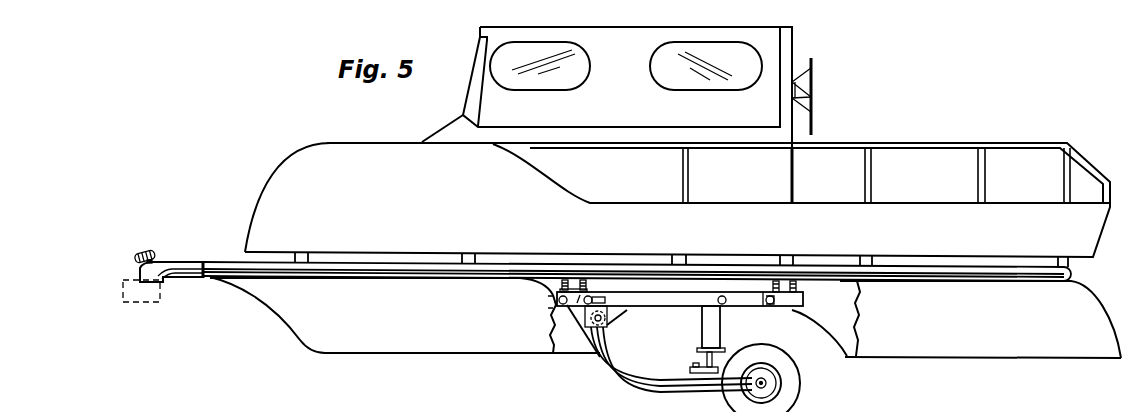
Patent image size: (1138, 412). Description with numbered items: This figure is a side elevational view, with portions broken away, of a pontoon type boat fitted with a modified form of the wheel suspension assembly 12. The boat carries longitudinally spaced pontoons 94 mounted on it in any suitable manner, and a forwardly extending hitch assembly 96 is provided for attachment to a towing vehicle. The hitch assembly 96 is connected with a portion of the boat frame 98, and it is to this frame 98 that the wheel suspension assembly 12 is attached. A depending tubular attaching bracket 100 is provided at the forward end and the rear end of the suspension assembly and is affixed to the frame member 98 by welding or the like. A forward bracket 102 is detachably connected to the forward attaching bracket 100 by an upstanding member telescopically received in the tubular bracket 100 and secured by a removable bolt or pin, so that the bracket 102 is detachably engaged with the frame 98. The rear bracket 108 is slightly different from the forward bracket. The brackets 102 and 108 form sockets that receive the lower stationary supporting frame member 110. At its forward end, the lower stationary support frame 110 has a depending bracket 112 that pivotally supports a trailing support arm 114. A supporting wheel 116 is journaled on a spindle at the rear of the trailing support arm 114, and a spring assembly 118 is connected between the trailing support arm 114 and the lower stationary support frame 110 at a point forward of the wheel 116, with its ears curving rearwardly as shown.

The wheel suspension assembly 12 is at (848, 128).
The pontoon 94 is at (941, 340).
The hitch assembly 96 is at (192, 268).
The boat frame 98 is at (933, 280).
The tubular attaching bracket 100 is at (577, 290).
The forward bracket 102 is at (553, 308).
The rear bracket 108 is at (803, 302).
The lower stationary supporting frame member 110 is at (646, 300).
The depending bracket 112 is at (610, 323).
The trailing support arm 114 is at (645, 373).
The supporting wheel 116 is at (790, 377).
The spring assembly 118 is at (722, 337).